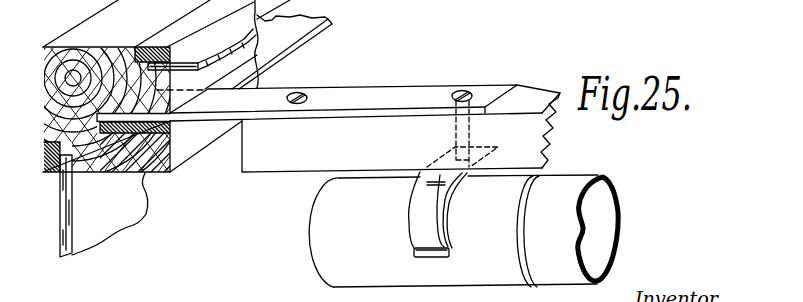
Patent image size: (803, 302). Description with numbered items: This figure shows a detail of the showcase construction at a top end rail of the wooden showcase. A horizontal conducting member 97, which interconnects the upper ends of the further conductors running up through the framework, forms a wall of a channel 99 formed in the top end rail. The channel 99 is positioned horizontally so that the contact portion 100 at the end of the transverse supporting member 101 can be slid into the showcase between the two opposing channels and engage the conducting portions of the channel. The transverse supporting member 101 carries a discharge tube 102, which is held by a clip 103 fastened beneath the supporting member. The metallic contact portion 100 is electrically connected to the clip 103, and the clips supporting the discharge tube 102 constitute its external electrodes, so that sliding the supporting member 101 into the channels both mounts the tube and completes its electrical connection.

The horizontal conducting member 97 is at (316, 31).
The channel 99 is at (110, 130).
The contact portion 100 is at (401, 88).
The transverse supporting member 101 is at (292, 170).
The discharge tube 102 is at (613, 148).
The clip 103 is at (410, 203).